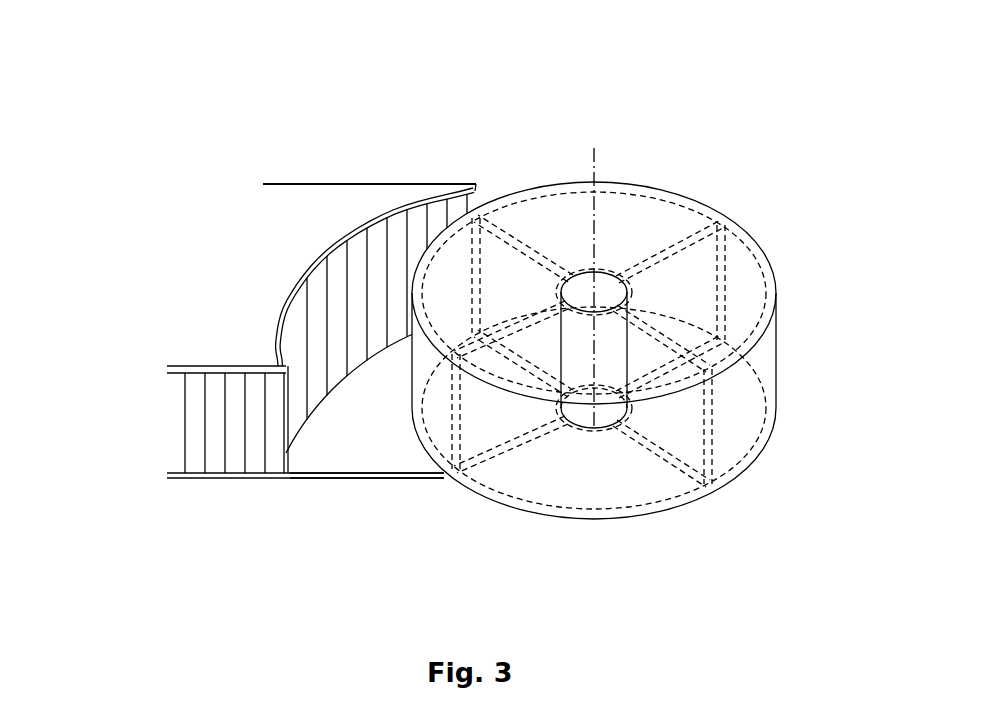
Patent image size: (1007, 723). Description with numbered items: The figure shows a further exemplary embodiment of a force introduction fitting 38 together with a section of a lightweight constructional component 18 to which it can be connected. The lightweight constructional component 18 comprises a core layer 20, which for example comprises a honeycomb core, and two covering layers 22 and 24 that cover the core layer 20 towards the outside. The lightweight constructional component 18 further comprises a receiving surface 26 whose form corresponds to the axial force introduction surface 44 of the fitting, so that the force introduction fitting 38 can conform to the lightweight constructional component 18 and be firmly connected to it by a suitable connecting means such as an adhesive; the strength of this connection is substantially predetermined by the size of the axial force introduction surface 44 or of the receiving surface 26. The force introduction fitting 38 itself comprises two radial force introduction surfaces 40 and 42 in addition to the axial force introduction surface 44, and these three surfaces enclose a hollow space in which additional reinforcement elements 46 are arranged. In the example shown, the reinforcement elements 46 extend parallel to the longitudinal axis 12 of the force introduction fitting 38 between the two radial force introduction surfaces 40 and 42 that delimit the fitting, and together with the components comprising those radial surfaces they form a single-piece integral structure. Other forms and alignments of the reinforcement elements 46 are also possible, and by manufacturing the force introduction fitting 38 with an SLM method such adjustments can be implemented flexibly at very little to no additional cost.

The longitudinal axis 12 is at (595, 223).
The lightweight constructional component 18 is at (279, 349).
The core layer 20 is at (197, 410).
The covering layer 22 is at (315, 440).
The covering layer 24 is at (285, 207).
The receiving surface 26 is at (330, 277).
The force introduction fitting 38 is at (574, 296).
The radial force introduction surface 40 is at (447, 277).
The radial force introduction surface 42 is at (600, 477).
The axial force introduction surface 44 is at (760, 358).
The reinforcement elements 46 is at (443, 473).